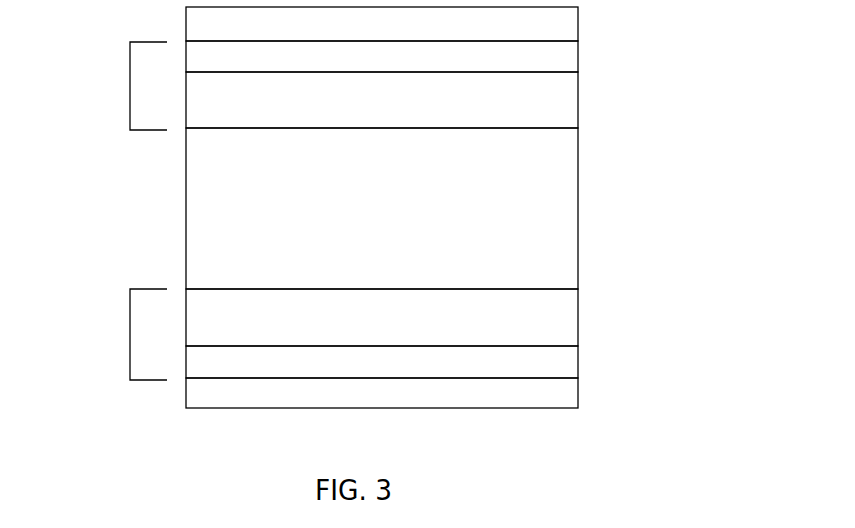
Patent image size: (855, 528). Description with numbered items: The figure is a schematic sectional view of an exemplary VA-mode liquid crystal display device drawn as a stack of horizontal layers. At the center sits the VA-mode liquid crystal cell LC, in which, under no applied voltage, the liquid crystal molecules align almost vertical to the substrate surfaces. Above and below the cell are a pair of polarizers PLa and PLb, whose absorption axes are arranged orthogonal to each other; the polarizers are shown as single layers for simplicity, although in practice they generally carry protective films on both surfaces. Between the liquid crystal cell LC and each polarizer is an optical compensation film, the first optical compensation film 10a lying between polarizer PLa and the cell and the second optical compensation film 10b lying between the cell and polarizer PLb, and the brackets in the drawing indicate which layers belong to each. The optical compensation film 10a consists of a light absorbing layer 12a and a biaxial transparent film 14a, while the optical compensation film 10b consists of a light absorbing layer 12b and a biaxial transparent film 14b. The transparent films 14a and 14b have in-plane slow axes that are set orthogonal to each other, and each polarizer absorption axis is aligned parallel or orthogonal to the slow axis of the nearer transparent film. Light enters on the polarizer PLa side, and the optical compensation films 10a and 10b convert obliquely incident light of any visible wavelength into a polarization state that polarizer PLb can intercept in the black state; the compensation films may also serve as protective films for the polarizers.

The polarizer PLa is at (567, 18).
The light absorbing layer 12a is at (562, 50).
The transparent film 14a is at (567, 107).
The VA-mode liquid crystal cell LC is at (551, 210).
The transparent film 14b is at (563, 314).
The light absorbing layer 12b is at (563, 362).
The polarizer PLb is at (571, 399).
The optical compensation film 10a is at (130, 79).
The optical compensation film 10b is at (130, 332).